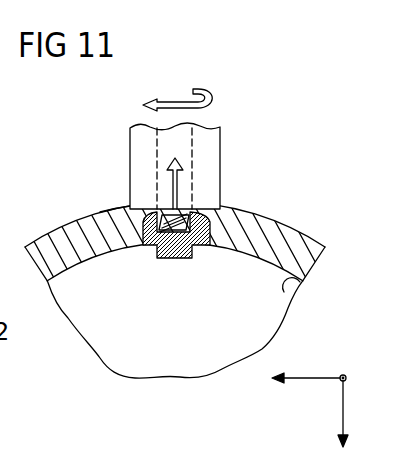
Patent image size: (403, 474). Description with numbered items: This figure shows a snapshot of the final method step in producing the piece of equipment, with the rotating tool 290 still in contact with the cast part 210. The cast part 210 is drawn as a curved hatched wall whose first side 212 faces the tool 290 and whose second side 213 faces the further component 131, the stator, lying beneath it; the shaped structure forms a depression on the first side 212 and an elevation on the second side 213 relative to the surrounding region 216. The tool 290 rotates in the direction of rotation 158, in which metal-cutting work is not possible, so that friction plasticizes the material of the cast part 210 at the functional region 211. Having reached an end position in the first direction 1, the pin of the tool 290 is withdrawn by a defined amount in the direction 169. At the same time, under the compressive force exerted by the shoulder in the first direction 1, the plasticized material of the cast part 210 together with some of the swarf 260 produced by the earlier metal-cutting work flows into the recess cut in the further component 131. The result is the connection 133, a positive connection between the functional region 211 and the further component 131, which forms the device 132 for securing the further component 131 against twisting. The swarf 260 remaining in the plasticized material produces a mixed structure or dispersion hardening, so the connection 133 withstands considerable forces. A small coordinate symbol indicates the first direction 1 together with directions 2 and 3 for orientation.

The first direction 1 is at (343, 415).
The second direction axis 2 is at (347, 374).
The third direction axis 3 is at (318, 377).
The further component 131 is at (100, 352).
The device for securing against twisting 132 is at (179, 154).
The connection 133 is at (197, 241).
The direction of rotation 158 is at (178, 93).
The direction 169 is at (212, 190).
The cast part 210 is at (195, 218).
The functional region 211 is at (118, 195).
The first side 212 is at (288, 224).
The second side 213 is at (292, 298).
The surrounding region 216 is at (107, 210).
The swarf 260 is at (173, 261).
The rotating tool 290 is at (126, 135).